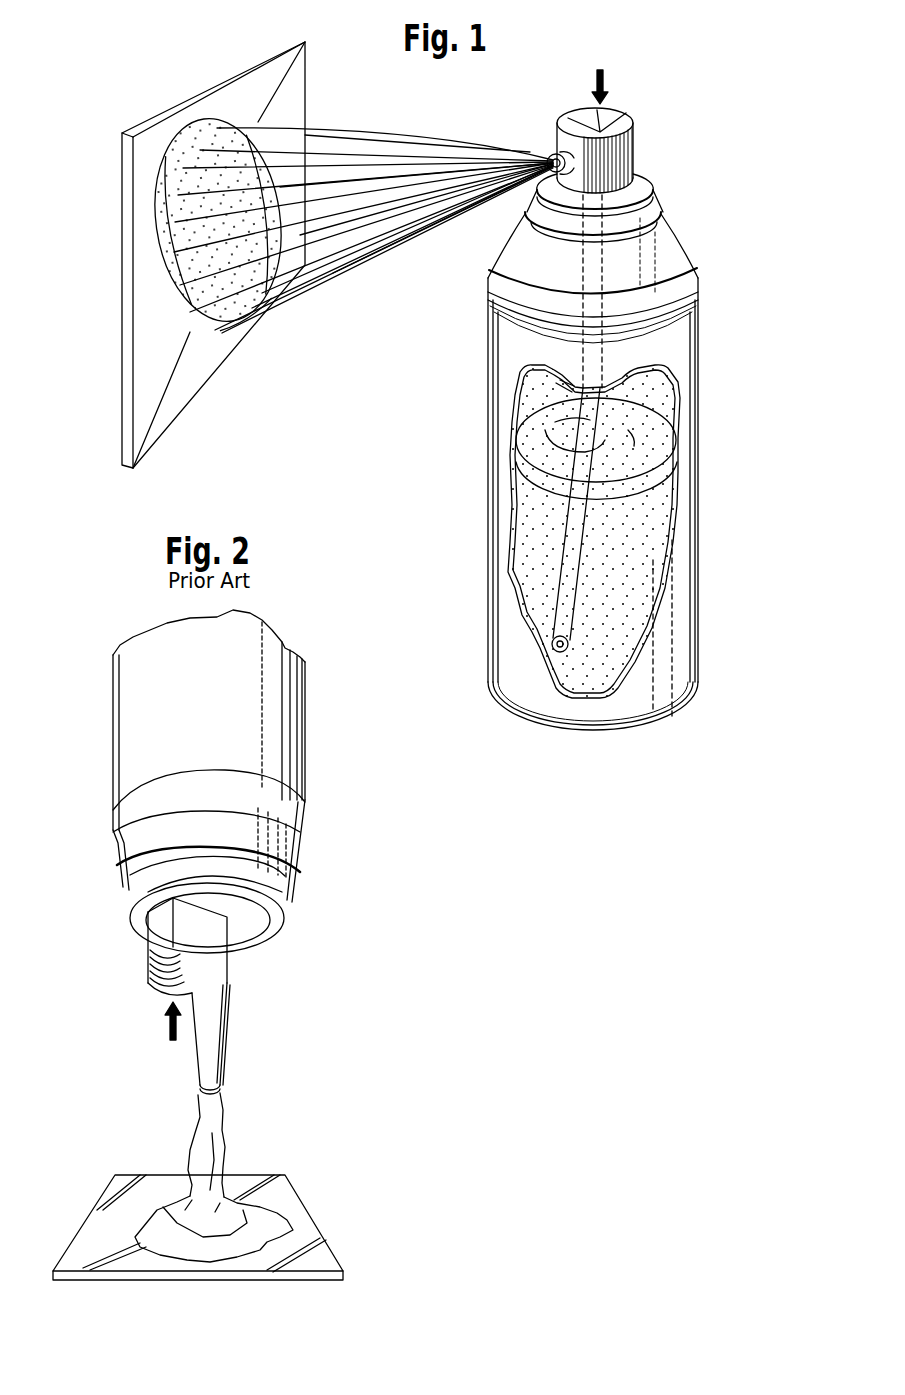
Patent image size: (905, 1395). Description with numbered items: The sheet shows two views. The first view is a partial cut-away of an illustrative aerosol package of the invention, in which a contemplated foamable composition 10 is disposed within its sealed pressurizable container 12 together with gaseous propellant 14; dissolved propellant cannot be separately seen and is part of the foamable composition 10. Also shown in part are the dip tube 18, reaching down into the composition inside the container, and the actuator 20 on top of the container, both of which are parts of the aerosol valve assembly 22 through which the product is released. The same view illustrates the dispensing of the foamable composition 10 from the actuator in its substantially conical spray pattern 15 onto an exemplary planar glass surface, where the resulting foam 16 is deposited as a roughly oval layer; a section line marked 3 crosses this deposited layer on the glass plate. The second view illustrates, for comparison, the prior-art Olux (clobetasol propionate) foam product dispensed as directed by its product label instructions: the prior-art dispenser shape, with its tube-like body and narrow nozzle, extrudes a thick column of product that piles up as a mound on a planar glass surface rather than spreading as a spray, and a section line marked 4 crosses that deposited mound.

In FIG. 1, the section line 3- 3 is at (272, 82).
In FIG. 2, the section line 4- 4 is at (108, 1153).
In FIG. 1, the foamable composition 10 is at (589, 504).
In FIG. 1, the sealed pressurizable container 12 is at (690, 622).
In FIG. 1, the gaseous propellant 14 is at (670, 392).
In FIG. 1, the substantially conical spray pattern 15 is at (440, 137).
In FIG. 1, the foam 16 is at (218, 340).
In FIG. 1, the dip tube 18 is at (572, 556).
In FIG. 1, the actuator 20 is at (618, 110).
In FIG. 1, the aerosol valve assembly 22 is at (668, 155).